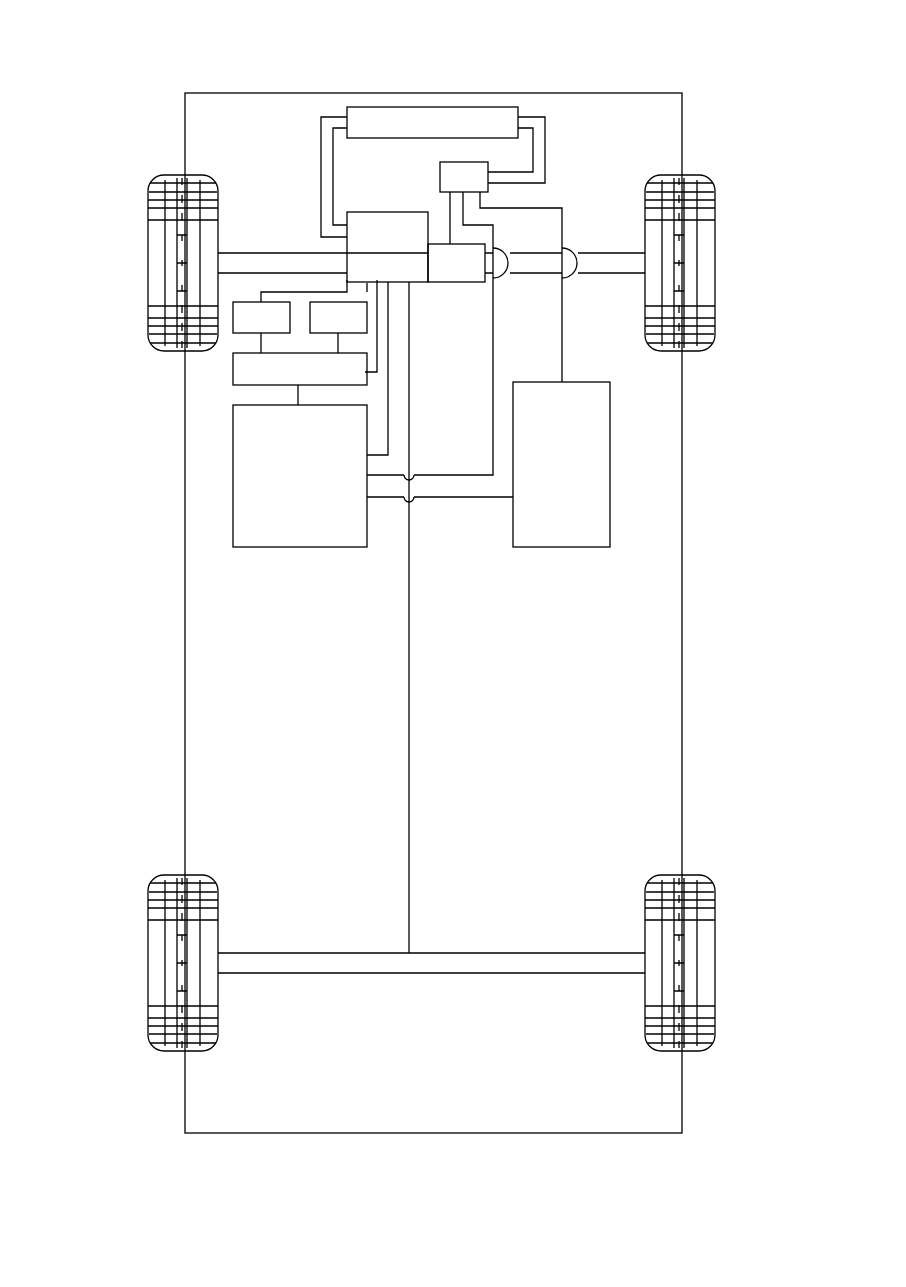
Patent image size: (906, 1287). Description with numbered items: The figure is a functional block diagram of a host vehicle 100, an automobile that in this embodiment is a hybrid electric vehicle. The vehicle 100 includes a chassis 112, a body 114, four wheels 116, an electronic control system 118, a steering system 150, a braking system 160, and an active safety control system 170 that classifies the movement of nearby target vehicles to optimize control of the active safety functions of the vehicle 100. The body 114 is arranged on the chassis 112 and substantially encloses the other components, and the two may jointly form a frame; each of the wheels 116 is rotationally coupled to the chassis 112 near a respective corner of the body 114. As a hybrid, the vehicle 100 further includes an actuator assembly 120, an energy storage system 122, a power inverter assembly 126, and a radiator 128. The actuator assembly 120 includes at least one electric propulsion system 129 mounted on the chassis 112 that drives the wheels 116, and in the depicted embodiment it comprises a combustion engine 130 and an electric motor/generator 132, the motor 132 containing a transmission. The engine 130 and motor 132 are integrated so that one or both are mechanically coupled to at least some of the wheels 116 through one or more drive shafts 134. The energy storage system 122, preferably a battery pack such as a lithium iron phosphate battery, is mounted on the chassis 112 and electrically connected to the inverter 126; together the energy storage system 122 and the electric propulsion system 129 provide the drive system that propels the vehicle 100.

The vehicle 100 is at (136, 40).
The chassis 112 is at (408, 695).
The body 114 is at (185, 562).
The wheels 116 is at (152, 200).
The electronic control system 118 is at (320, 527).
The actuator assembly 120 is at (428, 298).
The energy storage system 122 is at (585, 511).
The power inverter assembly 126 is at (486, 178).
The radiator 128 is at (425, 107).
The electric propulsion system 129 is at (443, 243).
The combustion engine 130 is at (380, 212).
The electric motor/generator 132 is at (462, 283).
The drive shafts 134 is at (267, 252).
The steering system 150 is at (233, 332).
The braking system 160 is at (332, 303).
The active safety control system 170 is at (242, 367).